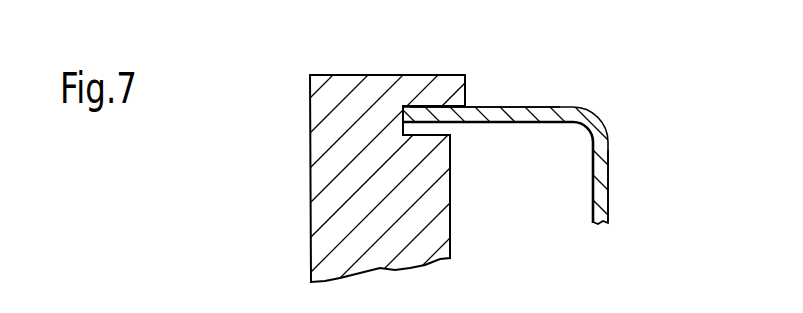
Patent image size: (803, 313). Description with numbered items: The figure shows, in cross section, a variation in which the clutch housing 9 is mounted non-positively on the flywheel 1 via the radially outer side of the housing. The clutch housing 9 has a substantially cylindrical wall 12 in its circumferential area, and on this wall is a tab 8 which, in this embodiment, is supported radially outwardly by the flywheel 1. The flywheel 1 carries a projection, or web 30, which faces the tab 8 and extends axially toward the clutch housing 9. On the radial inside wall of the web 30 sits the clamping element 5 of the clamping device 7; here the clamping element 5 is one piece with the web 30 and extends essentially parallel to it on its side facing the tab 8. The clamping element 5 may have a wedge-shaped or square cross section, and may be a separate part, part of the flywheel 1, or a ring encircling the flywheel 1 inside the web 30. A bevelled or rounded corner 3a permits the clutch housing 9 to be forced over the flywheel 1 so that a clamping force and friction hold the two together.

The flywheel 1 is at (312, 232).
The bevelled or rounded corner 3a is at (470, 104).
The cylindrical wall 12 is at (498, 123).
The clutch housing 9 is at (609, 207).
The clamping element 5 is at (448, 101).
The clamping device 7 is at (433, 106).
The web 30 is at (463, 104).
The tab 8 is at (452, 130).